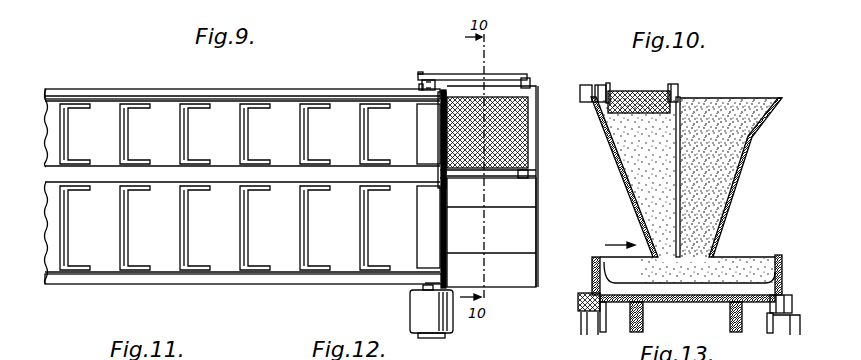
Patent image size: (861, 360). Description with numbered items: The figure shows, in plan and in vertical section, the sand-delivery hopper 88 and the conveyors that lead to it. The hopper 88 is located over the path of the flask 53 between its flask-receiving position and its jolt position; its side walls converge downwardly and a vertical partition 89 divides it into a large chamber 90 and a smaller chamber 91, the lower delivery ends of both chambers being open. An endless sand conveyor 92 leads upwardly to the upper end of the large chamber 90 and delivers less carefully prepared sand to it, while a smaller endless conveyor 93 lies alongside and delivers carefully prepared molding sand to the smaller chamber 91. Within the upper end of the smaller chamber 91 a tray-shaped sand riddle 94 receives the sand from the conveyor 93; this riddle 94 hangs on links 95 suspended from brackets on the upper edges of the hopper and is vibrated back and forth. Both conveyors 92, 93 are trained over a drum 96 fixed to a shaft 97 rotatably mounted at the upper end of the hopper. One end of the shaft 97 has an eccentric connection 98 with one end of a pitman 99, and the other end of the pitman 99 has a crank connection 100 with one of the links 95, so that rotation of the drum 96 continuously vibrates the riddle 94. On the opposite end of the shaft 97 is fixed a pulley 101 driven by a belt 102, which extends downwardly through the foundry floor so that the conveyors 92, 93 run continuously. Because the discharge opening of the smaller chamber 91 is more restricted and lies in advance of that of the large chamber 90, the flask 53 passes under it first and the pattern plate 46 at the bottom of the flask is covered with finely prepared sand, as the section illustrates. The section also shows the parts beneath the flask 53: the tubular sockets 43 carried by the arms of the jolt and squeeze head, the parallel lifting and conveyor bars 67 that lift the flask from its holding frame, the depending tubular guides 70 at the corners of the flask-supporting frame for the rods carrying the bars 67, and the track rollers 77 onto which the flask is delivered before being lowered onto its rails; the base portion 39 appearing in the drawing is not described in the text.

In FIG. 9, the delivery hopper 88 is at (541, 223).
In FIG. 10, the delivery hopper 88 is at (745, 166).
In FIG. 9, the vertical partition 89 is at (483, 177).
In FIG. 10, the vertical partition 89 is at (688, 116).
In FIG. 9, the large chamber 90 is at (533, 198).
In FIG. 10, the large chamber 90 is at (753, 101).
In FIG. 9, the smaller chamber 91 is at (535, 143).
In FIG. 10, the smaller chamber 91 is at (628, 126).
In FIG. 9, the endless sand conveyor 92 is at (288, 264).
In FIG. 9, the smaller endless conveyor 93 is at (337, 110).
In FIG. 9, the sand riddle 94 is at (505, 128).
In FIG. 10, the sand riddle 94 is at (640, 92).
In FIG. 9, the links 95 is at (529, 172).
In FIG. 10, the links 95 is at (611, 84).
In FIG. 9, the drum 96 is at (418, 177).
In FIG. 9, the shaft 97 is at (419, 86).
In FIG. 9, the eccentric connection 98 is at (425, 80).
In FIG. 9, the pitman 99 is at (460, 73).
In FIG. 10, the pitman 99 is at (583, 97).
In FIG. 9, the crank connection 100 is at (524, 78).
In FIG. 10, the crank connection 100 is at (594, 84).
In FIG. 9, the pulley 101 is at (428, 338).
In FIG. 9, the belt 102 is at (411, 309).
In FIG. 10, the flask 53 is at (591, 262).
In FIG. 10, the pattern plate 46 is at (687, 311).
In FIG. 10, the tubular sockets 43 is at (730, 314).
In FIG. 10, the lifting and conveyor bars 67 is at (579, 303).
In FIG. 10, the track rollers 77 is at (601, 306).
In FIG. 10, the tubular guides 70 is at (583, 321).
In FIG. 10, the base 39 is at (602, 354).